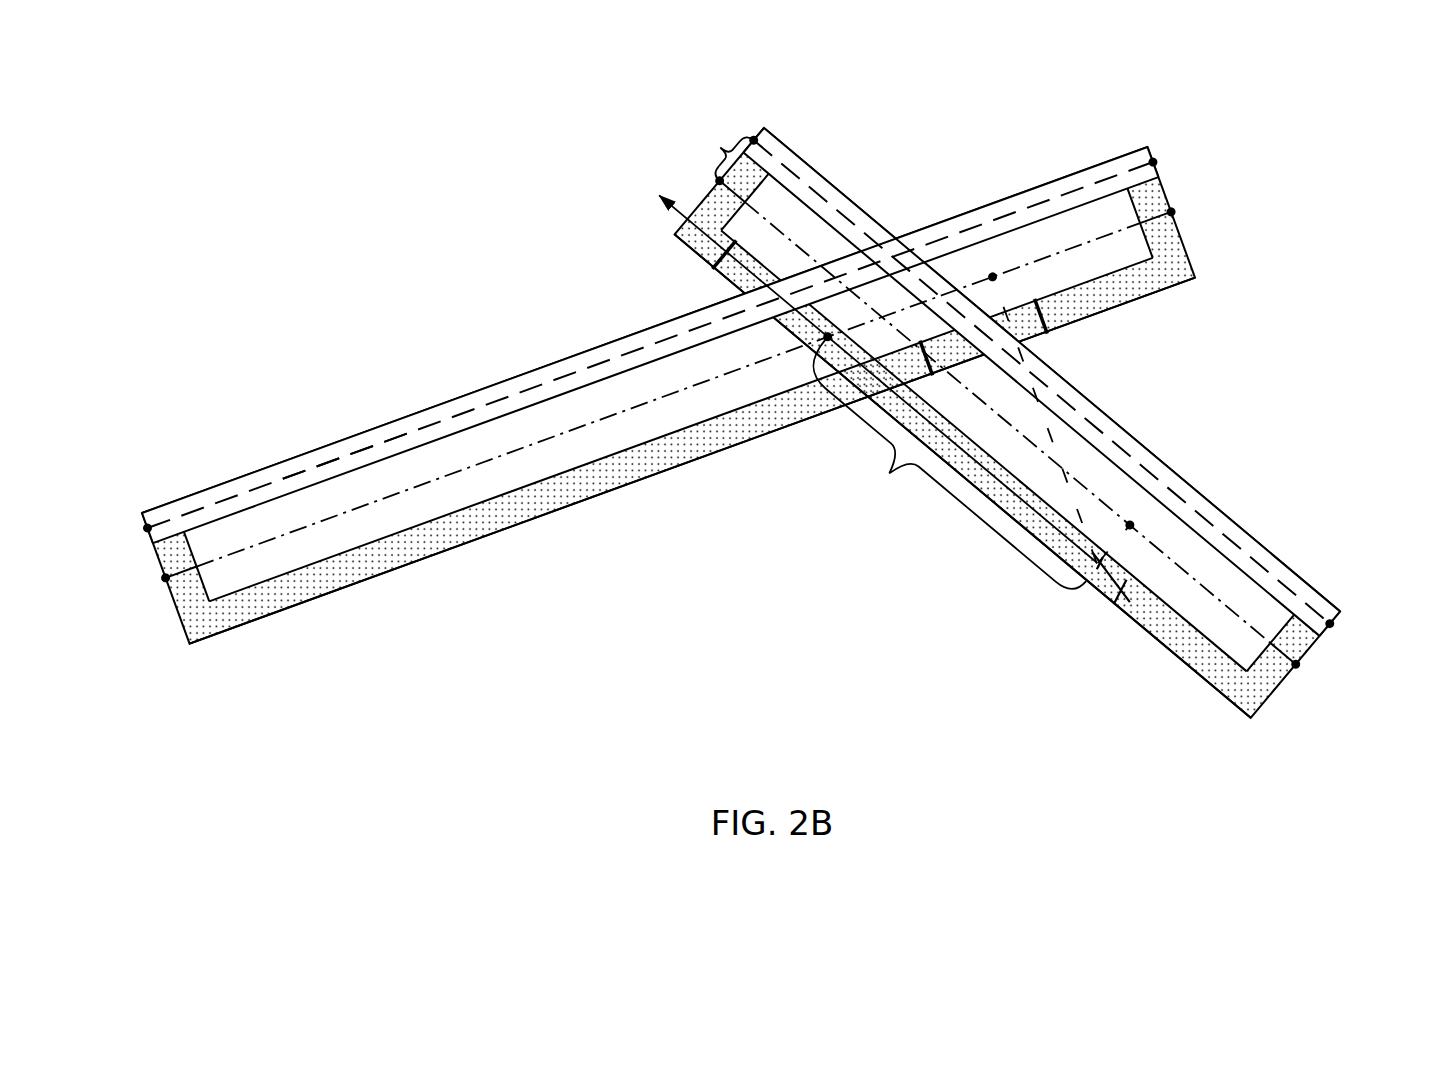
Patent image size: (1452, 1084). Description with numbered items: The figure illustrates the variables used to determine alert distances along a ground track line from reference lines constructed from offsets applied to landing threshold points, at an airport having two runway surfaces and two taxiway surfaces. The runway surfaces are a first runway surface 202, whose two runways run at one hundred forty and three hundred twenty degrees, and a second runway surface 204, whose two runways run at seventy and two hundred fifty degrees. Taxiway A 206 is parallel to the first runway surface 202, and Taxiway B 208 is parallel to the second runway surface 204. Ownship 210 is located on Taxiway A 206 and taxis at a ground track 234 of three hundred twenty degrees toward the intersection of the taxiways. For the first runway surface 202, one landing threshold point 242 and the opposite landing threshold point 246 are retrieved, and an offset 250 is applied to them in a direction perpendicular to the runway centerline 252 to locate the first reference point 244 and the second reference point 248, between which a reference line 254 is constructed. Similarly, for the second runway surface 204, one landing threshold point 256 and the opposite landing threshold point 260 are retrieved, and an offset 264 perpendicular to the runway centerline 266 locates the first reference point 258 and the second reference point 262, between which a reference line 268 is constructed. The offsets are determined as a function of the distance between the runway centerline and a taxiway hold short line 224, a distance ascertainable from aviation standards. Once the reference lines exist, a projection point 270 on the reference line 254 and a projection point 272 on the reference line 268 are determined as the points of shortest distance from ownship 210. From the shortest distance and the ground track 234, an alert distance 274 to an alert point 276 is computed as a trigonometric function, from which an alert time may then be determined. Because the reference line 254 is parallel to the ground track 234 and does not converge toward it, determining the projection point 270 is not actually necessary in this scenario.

The Runways 14/32 202 is at (882, 212).
The Runways 7/25 204 is at (490, 385).
The Taxiway A 206 is at (1122, 622).
The Taxiway B 208 is at (420, 574).
The ownship 210 is at (1062, 594).
The taxiway hold short line 224 is at (1052, 312).
The ground track 234 is at (837, 354).
The LTP for Runway 14 242 is at (760, 139).
The first reference point 244 is at (710, 172).
The LTP for Runway 32 246 is at (1338, 621).
The second reference point 248 is at (1300, 672).
The offset 250 is at (716, 140).
The runway centerline 252 is at (1065, 396).
The reference line 254 is at (1102, 496).
The LTP for Runway 7 256 is at (150, 520).
The first reference point 258 is at (172, 584).
The LTP for Runway 25 260 is at (1162, 161).
The second reference point 262 is at (1182, 212).
The offset 264 is at (345, 452).
The runway centerline 266 is at (650, 355).
The reference line 268 is at (370, 518).
The projection point 270 is at (1137, 525).
The projection point 272 is at (997, 272).
The alert distance 274 is at (942, 477).
The alert point 276 is at (820, 333).